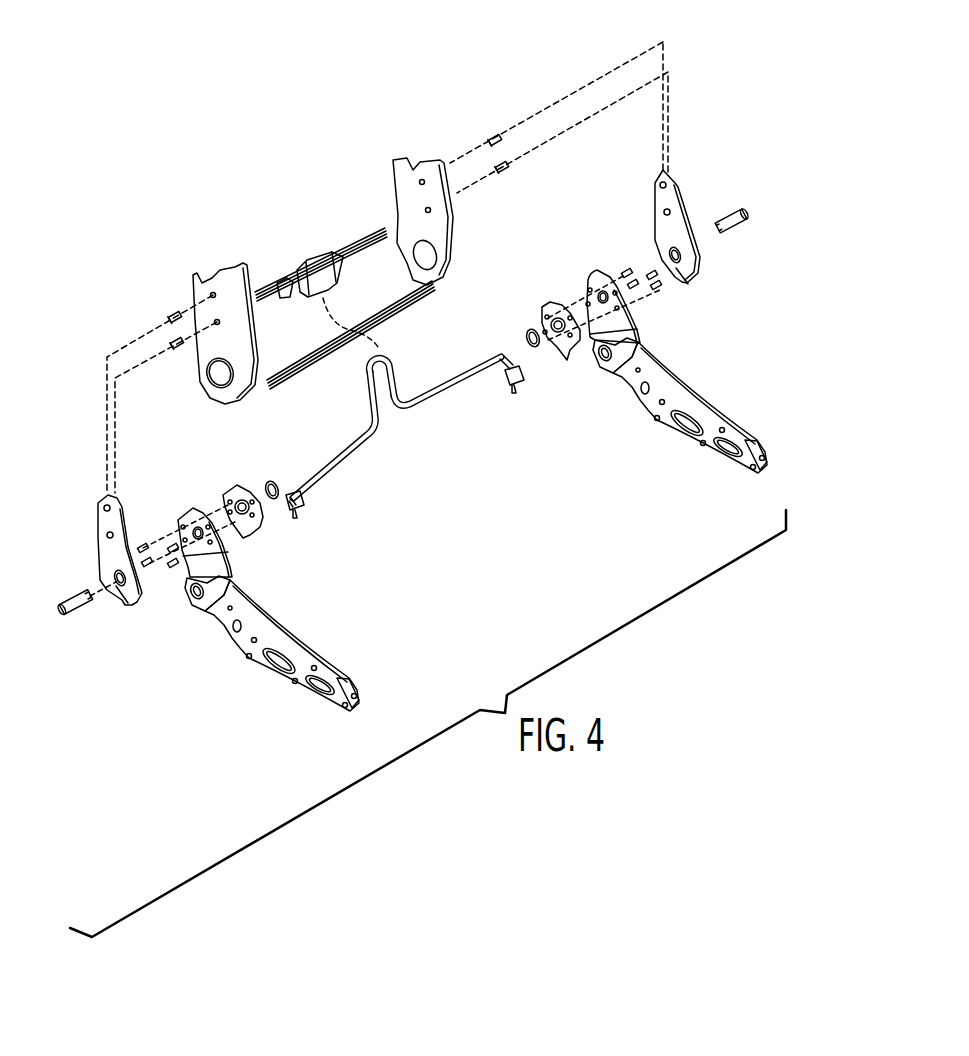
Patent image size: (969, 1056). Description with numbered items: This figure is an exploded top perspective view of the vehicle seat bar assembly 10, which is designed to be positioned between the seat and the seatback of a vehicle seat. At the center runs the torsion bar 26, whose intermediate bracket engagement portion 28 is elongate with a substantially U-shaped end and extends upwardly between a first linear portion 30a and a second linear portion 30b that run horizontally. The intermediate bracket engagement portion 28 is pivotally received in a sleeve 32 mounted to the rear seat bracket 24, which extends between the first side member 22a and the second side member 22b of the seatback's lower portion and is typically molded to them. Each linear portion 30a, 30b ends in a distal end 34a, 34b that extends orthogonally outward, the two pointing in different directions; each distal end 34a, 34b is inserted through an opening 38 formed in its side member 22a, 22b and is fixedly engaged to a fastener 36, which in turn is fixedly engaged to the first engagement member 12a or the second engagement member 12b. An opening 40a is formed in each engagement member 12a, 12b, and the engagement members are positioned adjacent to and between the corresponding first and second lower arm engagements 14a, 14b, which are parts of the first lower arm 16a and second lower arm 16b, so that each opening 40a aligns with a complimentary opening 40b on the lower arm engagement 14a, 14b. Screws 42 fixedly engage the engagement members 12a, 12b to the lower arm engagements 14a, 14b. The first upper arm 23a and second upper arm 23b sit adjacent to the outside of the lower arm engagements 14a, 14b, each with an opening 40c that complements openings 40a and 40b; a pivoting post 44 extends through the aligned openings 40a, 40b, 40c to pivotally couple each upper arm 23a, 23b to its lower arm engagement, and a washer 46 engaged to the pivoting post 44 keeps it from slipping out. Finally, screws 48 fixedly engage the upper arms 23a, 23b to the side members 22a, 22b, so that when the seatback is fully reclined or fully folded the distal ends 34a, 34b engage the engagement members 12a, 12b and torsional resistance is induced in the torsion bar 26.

The vehicle seat bar assembly 10 is at (550, 494).
The first engagement member 12a is at (558, 308).
The second engagement member 12b is at (230, 490).
The first lower arm engagement 14a is at (637, 333).
The second lower arm engagement 14b is at (187, 573).
The first lower arm 16a is at (720, 417).
The second lower arm 16b is at (307, 650).
The first side member 22a is at (412, 173).
The second side member 22b is at (200, 282).
The first upper arm 23a is at (675, 180).
The second upper arm 23b is at (100, 525).
The rear seat bracket 24 is at (352, 237).
The torsion bar 26 is at (393, 444).
The intermediate bracket engagement portion 28 is at (392, 350).
The first linear portion 30a is at (447, 369).
The second linear portion 30b is at (345, 440).
The sleeve 32 is at (305, 267).
The first distal end 34a is at (512, 347).
The second distal end 34b is at (285, 490).
The fastener 36 is at (525, 377).
The opening 38 is at (217, 377).
The opening 40a is at (587, 340).
The complimentary opening 40b is at (613, 280).
The opening 40c is at (678, 257).
The screws 42 is at (653, 272).
The pivoting post 44 is at (731, 213).
The washer 46 is at (528, 328).
The screws 48 is at (495, 125).